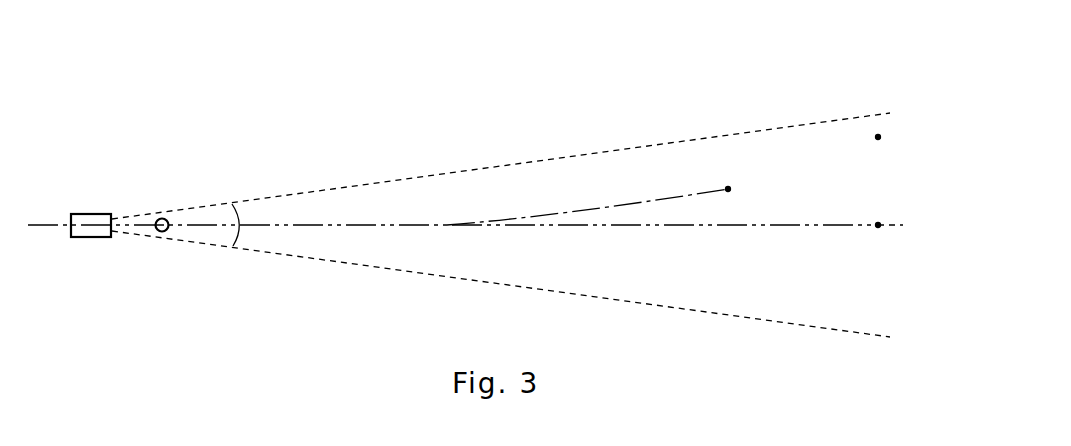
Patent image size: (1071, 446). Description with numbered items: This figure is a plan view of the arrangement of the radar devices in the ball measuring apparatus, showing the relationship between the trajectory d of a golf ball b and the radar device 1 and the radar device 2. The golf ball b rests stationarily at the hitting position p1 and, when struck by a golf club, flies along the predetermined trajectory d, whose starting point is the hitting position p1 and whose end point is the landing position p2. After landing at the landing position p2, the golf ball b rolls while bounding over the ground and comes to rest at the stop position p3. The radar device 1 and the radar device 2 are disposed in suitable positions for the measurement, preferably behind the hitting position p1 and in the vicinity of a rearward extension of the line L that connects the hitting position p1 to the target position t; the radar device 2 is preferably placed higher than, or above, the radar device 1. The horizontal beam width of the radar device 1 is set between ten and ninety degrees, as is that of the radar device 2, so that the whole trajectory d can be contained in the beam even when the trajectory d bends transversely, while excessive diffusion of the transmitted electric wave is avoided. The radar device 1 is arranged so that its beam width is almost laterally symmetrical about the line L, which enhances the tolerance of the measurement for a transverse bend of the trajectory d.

The radar device 1 is at (90, 277).
The radar device 2 is at (90, 225).
The hitting position p1 is at (159, 186).
The golf ball b is at (161, 218).
The trajectory d is at (553, 217).
The landing position p2 is at (728, 188).
The stop position p3 is at (878, 137).
The line L is at (717, 227).
The target position t is at (878, 226).